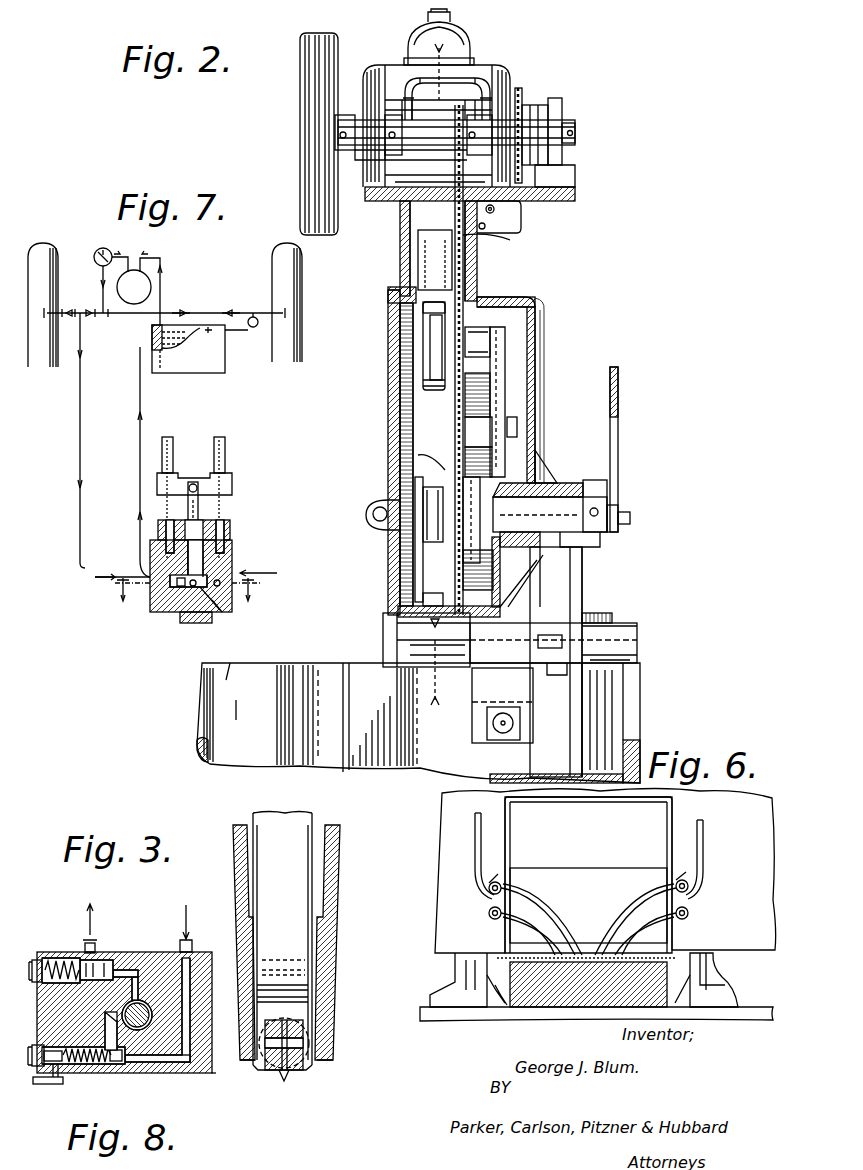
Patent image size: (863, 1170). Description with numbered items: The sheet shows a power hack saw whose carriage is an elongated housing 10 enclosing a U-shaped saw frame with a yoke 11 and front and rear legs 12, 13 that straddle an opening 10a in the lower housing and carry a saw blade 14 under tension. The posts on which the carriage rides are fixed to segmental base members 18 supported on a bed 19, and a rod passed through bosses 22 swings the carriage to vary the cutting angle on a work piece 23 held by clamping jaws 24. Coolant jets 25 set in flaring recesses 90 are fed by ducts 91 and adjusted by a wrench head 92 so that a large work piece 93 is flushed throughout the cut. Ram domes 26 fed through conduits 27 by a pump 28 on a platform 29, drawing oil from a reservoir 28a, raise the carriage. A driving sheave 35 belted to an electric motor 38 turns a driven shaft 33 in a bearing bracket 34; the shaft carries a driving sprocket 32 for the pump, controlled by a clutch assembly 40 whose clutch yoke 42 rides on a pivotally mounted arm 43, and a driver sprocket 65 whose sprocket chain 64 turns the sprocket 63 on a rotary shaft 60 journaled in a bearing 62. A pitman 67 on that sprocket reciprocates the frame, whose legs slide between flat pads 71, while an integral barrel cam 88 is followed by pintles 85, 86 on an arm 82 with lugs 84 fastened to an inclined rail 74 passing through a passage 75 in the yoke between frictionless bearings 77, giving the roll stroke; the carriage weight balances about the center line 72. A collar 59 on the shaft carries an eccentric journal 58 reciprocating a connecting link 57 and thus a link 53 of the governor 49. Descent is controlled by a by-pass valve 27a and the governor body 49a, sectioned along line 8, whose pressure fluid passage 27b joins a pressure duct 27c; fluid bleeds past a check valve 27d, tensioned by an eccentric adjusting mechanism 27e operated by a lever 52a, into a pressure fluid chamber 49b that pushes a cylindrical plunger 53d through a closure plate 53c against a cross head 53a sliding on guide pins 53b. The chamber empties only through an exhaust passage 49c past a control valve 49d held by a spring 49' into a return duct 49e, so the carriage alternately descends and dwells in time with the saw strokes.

In FIG. 2, the housing 10 is at (388, 408).
In FIG. 3, the housing 10 is at (340, 838).
In FIG. 6, the housing 10 is at (750, 840).
In FIG. 6, the opening 10a is at (667, 826).
In FIG. 2, the yoke 11 is at (400, 256).
In FIG. 2, the front leg 12 is at (418, 455).
In FIG. 3, the rear leg 13 is at (300, 876).
In FIG. 2, the saw blade 14 is at (397, 625).
In FIG. 3, the saw blade 14 is at (278, 1076).
In FIG. 2, the segmental base members 18 is at (397, 615).
In FIG. 2, the bed 19 is at (640, 740).
In FIG. 2, the bosses 22 is at (366, 515).
In FIG. 7, the bosses 22 is at (330, 540).
In FIG. 2, the work piece 23 is at (637, 634).
In FIG. 2, the clamping jaws 24 is at (582, 597).
In FIG. 6, the jet producing means 25 is at (499, 882).
In FIG. 2, the ram domes 26 is at (462, 40).
In FIG. 7, the ram domes 26 is at (55, 255).
In FIG. 7, the conduits 27 is at (75, 312).
In FIG. 7, the by-pass valve 27a is at (255, 328).
In FIG. 8, the pressure fluid passage 27b is at (200, 955).
In FIG. 7, the pressure duct 27c is at (94, 446).
In FIG. 8, the pressure duct 27c is at (174, 920).
In FIG. 8, the check valve 27d is at (118, 1066).
In FIG. 8, the eccentric adjusting mechanism 27e is at (68, 1068).
In FIG. 2, the pump 28 is at (412, 92).
In FIG. 7, the pump 28 is at (150, 282).
In FIG. 7, the reservoir 28a is at (208, 365).
In FIG. 2, the platform 29 is at (555, 201).
In FIG. 2, the driving sprocket 32 is at (522, 100).
In FIG. 2, the driven shaft 33 is at (428, 133).
In FIG. 2, the bearing bracket 34 is at (385, 170).
In FIG. 2, the driving sheave 35 is at (300, 168).
In FIG. 2, the electric motor 38 is at (375, 78).
In FIG. 2, the clutch assembly 40 is at (548, 107).
In FIG. 2, the clutch yoke 42 is at (566, 122).
In FIG. 2, the pivotally mounted arm 43 is at (521, 220).
In FIG. 7, the governor 49 is at (270, 574).
In FIG. 8, the spring 49' is at (54, 949).
In FIG. 7, the body 49a is at (172, 607).
In FIG. 8, the body 49a is at (212, 1073).
In FIG. 7, the pressure fluid chamber 49b is at (225, 607).
In FIG. 8, the pressure fluid chamber 49b is at (150, 1030).
In FIG. 8, the exhaust passage 49c is at (125, 975).
In FIG. 8, the control valve 49d is at (98, 968).
In FIG. 7, the return duct 49e is at (138, 455).
In FIG. 8, the return duct 49e is at (88, 950).
In FIG. 8, the lever 52a is at (42, 1084).
In FIG. 7, the link 53 is at (199, 498).
In FIG. 7, the cross head 53a is at (212, 482).
In FIG. 7, the guide pins 53b is at (220, 448).
In FIG. 7, the closure plate 53c is at (230, 532).
In FIG. 7, the cylindrical plunger 53d is at (212, 560).
In FIG. 8, the cylindrical plunger 53d is at (153, 1012).
In FIG. 2, the connecting link 57 is at (618, 490).
In FIG. 2, the eccentric journal 58 is at (630, 528).
In FIG. 2, the collar 59 is at (592, 542).
In FIG. 2, the rotary shaft 60 is at (555, 510).
In FIG. 2, the bearing 62 is at (545, 480).
In FIG. 2, the driving sprocket 63 is at (455, 472).
In FIG. 2, the sprocket chain 64 is at (475, 247).
In FIG. 2, the driver sprocket 65 is at (464, 118).
In FIG. 2, the pitman 67 is at (423, 532).
In FIG. 2, the flat pads or bearings 71 is at (415, 560).
In FIG. 3, the flat pads or bearings 71 is at (313, 955).
In FIG. 2, the center line 72 is at (437, 373).
In FIG. 2, the rail 74 is at (426, 360).
In FIG. 2, the passage 75 is at (428, 340).
In FIG. 2, the frictionless bearings 77 is at (421, 313).
In FIG. 2, the arm 82 is at (505, 385).
In FIG. 2, the lugs 84 is at (486, 322).
In FIG. 2, the pintle 85 is at (483, 505).
In FIG. 2, the pintle 86 is at (478, 430).
In FIG. 2, the barrel cam 88 is at (521, 588).
In FIG. 6, the recesses 90 is at (510, 887).
In FIG. 6, the ducts 91 is at (478, 860).
In FIG. 6, the head 92 is at (489, 912).
In FIG. 6, the work piece 93 is at (580, 1007).
In FIG. 7, the section line 8 is at (188, 597).